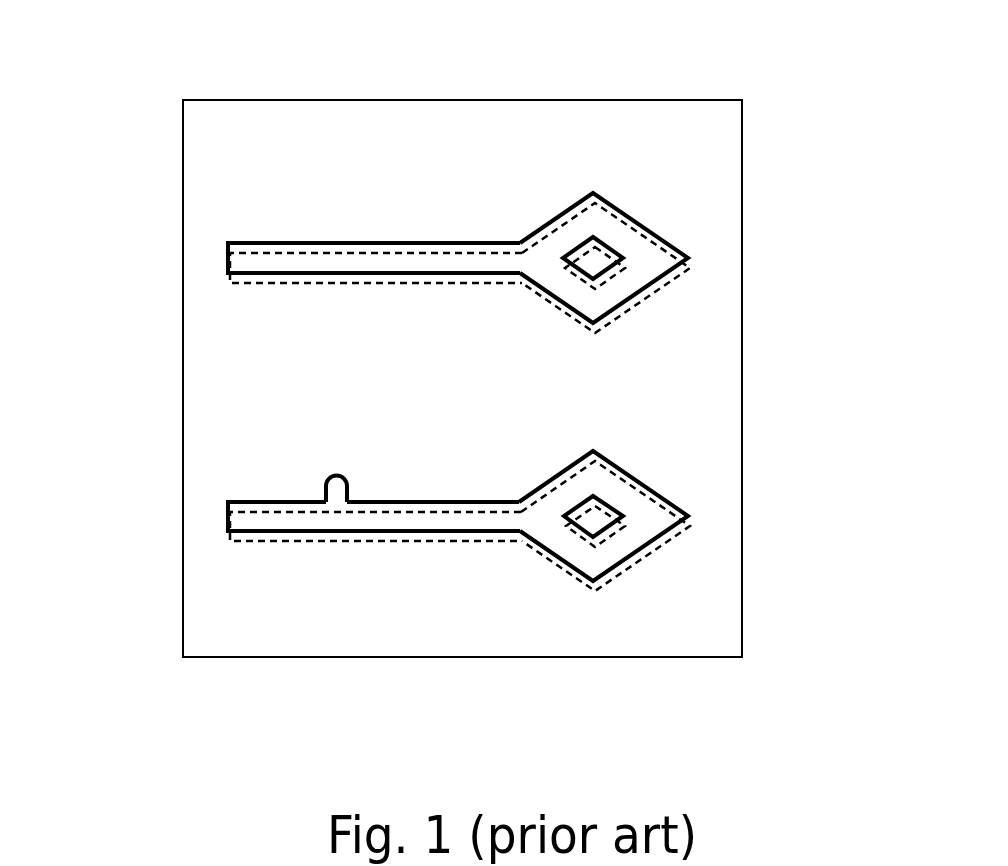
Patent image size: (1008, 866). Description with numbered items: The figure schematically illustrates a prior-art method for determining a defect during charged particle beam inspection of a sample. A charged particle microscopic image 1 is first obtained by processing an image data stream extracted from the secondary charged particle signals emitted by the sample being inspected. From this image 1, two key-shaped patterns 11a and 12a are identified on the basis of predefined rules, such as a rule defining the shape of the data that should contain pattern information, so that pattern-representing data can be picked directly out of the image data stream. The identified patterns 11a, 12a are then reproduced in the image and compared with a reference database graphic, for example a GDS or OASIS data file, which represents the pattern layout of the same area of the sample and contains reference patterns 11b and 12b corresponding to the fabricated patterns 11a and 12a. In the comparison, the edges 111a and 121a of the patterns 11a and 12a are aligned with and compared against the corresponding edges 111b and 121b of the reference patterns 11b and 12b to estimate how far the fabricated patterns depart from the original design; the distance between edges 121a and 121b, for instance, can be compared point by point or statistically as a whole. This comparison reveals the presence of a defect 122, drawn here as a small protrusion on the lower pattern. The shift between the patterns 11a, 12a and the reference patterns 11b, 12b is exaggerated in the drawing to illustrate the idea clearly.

The charged particle microscopic image 1 is at (549, 99).
The edge of pattern 11a 111a is at (277, 242).
The edge of reference pattern 11b 111b is at (397, 253).
The key-shaped pattern 11a is at (648, 223).
The reference pattern 11b is at (663, 285).
The edge of pattern 12a 121a is at (240, 502).
The edge of reference pattern 12b 121b is at (262, 513).
The defect 122 is at (335, 487).
The key-shaped pattern 12a is at (646, 485).
The reference pattern 12b is at (663, 544).